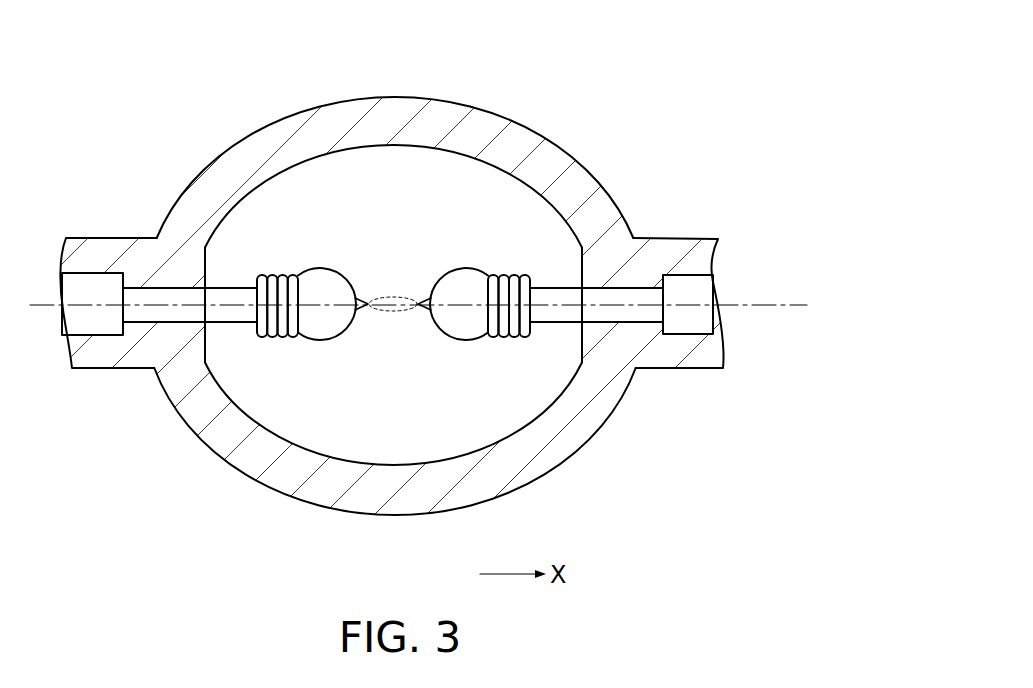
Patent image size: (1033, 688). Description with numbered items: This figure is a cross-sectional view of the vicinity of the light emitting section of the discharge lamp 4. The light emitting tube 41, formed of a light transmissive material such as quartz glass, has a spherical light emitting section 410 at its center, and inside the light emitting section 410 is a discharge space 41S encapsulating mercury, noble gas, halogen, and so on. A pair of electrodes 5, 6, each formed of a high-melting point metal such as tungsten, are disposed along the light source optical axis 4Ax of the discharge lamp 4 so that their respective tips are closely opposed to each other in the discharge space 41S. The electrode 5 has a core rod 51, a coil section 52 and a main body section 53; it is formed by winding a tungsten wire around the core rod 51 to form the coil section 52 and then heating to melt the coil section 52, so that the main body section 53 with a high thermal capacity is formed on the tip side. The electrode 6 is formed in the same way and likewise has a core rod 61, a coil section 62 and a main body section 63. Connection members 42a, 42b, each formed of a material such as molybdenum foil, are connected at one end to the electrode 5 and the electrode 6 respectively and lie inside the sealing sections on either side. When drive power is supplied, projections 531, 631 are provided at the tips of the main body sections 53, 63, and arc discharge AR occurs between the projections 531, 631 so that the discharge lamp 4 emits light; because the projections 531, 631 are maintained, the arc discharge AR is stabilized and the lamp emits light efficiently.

The discharge lamp 4 is at (619, 59).
The light emitting tube 41 is at (534, 108).
The light emitting section 410 is at (352, 110).
The discharge space 41S is at (445, 165).
The connection member 42a is at (693, 287).
The connection member 42b is at (90, 287).
The light source optical axis 4Ax is at (778, 302).
The electrode 5 is at (489, 251).
The core rod 51 is at (643, 314).
The coil section 52 is at (488, 344).
The main body section 53 is at (463, 341).
The projection 531 is at (421, 313).
The electrode 6 is at (297, 251).
The core rod 61 is at (138, 314).
The coil section 62 is at (298, 344).
The main body section 63 is at (319, 341).
The projection 631 is at (364, 313).
The arc discharge AR is at (399, 292).